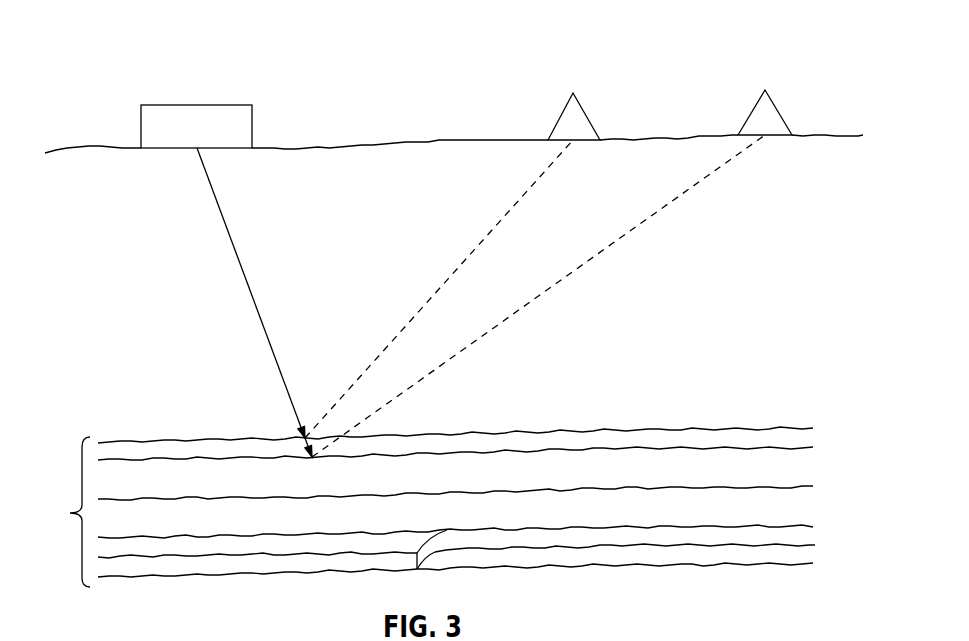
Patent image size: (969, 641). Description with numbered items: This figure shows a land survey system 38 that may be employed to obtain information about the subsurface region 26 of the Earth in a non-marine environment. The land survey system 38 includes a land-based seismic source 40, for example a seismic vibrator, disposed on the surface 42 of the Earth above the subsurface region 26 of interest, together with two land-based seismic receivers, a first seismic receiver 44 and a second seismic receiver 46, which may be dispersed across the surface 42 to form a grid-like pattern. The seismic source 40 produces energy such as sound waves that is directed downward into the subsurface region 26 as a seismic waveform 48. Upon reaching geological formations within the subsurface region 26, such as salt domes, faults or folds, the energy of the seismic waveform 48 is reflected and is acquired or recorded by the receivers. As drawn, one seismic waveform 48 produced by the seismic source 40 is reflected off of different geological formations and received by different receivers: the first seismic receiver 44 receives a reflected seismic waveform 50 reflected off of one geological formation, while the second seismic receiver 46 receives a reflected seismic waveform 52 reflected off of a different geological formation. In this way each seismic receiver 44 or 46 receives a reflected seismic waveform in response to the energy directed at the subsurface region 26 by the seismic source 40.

The subsurface region 26 is at (424, 507).
The land survey system 38 is at (686, 50).
The seismic source 40 is at (177, 104).
The surface of the Earth 42 is at (370, 147).
The first seismic receiver 44 is at (588, 118).
The second seismic receiver 46 is at (778, 113).
The seismic waveform 48 is at (250, 297).
The reflected seismic waveform 50 is at (485, 235).
The reflected seismic waveform 52 is at (500, 320).